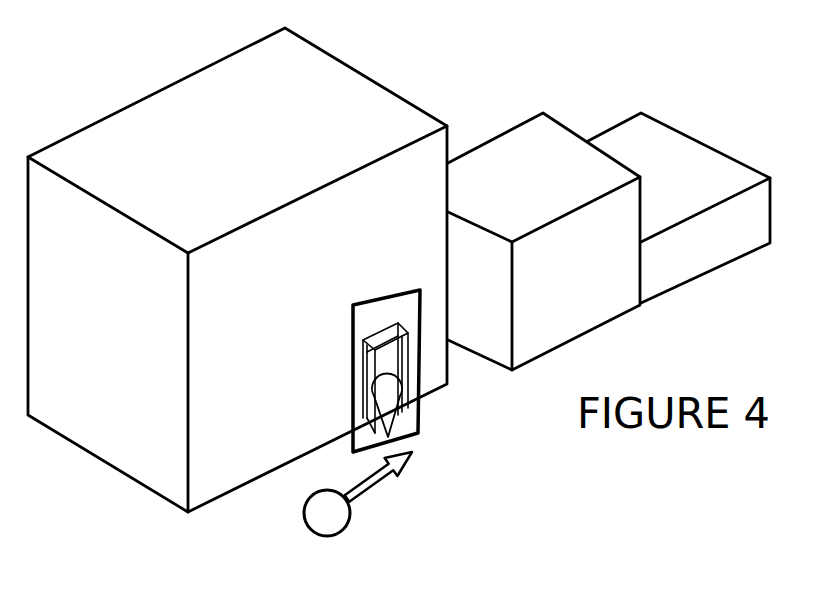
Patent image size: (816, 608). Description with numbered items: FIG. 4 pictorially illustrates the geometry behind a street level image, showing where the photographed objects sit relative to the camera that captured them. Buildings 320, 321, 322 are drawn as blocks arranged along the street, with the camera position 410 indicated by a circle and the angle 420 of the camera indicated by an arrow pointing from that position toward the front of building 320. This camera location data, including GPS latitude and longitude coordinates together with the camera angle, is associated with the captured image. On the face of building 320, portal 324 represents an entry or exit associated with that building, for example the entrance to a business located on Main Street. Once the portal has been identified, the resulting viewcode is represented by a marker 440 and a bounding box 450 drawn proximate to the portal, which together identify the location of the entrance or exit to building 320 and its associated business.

The building 320 is at (165, 88).
The building 321 is at (523, 120).
The building 322 is at (692, 136).
The building portal 324 is at (352, 416).
The bounding box 450 is at (421, 418).
The marker 440 is at (417, 442).
The angle of the camera 420 is at (373, 497).
The position of the camera 410 is at (326, 537).